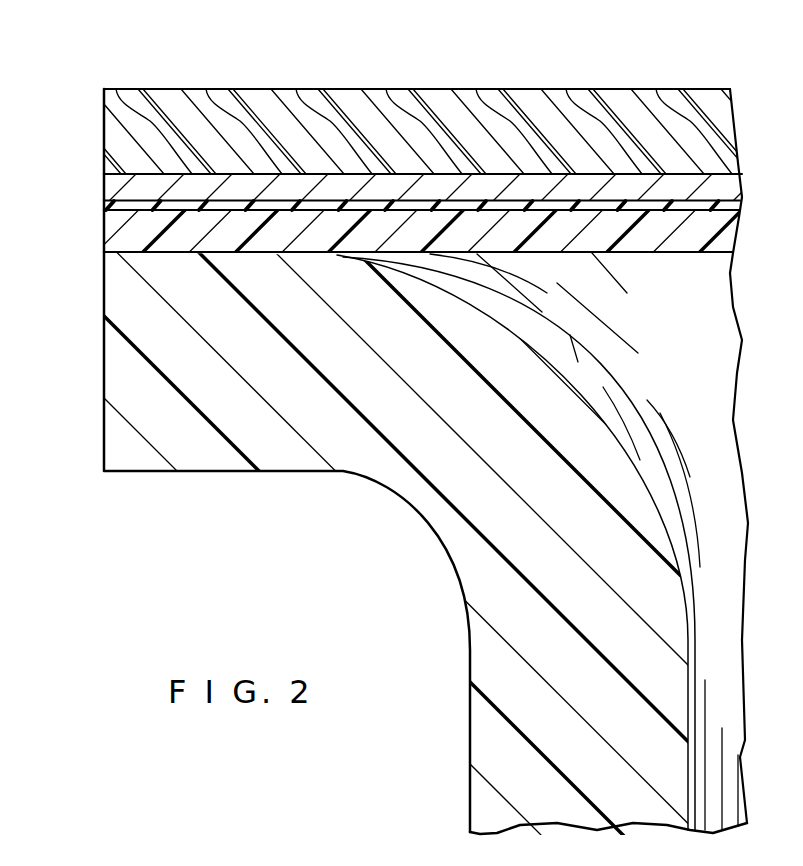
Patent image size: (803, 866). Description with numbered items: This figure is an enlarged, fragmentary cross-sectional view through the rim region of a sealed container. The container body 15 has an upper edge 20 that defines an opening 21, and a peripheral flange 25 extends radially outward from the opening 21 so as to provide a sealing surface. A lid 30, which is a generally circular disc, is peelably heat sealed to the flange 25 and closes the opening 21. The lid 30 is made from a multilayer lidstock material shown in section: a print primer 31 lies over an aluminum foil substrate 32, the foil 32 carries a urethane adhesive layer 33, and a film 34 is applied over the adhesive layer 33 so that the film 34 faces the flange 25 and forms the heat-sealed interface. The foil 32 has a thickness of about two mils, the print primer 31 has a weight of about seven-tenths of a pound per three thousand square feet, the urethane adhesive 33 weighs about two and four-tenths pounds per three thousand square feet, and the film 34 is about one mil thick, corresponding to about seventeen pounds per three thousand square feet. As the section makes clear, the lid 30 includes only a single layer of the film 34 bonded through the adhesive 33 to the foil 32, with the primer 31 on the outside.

The container body 15 is at (482, 737).
The upper edge 20 is at (208, 474).
The opening 21 is at (548, 283).
The peripheral flange 25 is at (117, 355).
The lid 30 is at (238, 88).
The print primer 31 is at (112, 128).
The aluminum foil substrate 32 is at (110, 187).
The urethane adhesive layer 33 is at (110, 205).
The film 34 is at (113, 227).